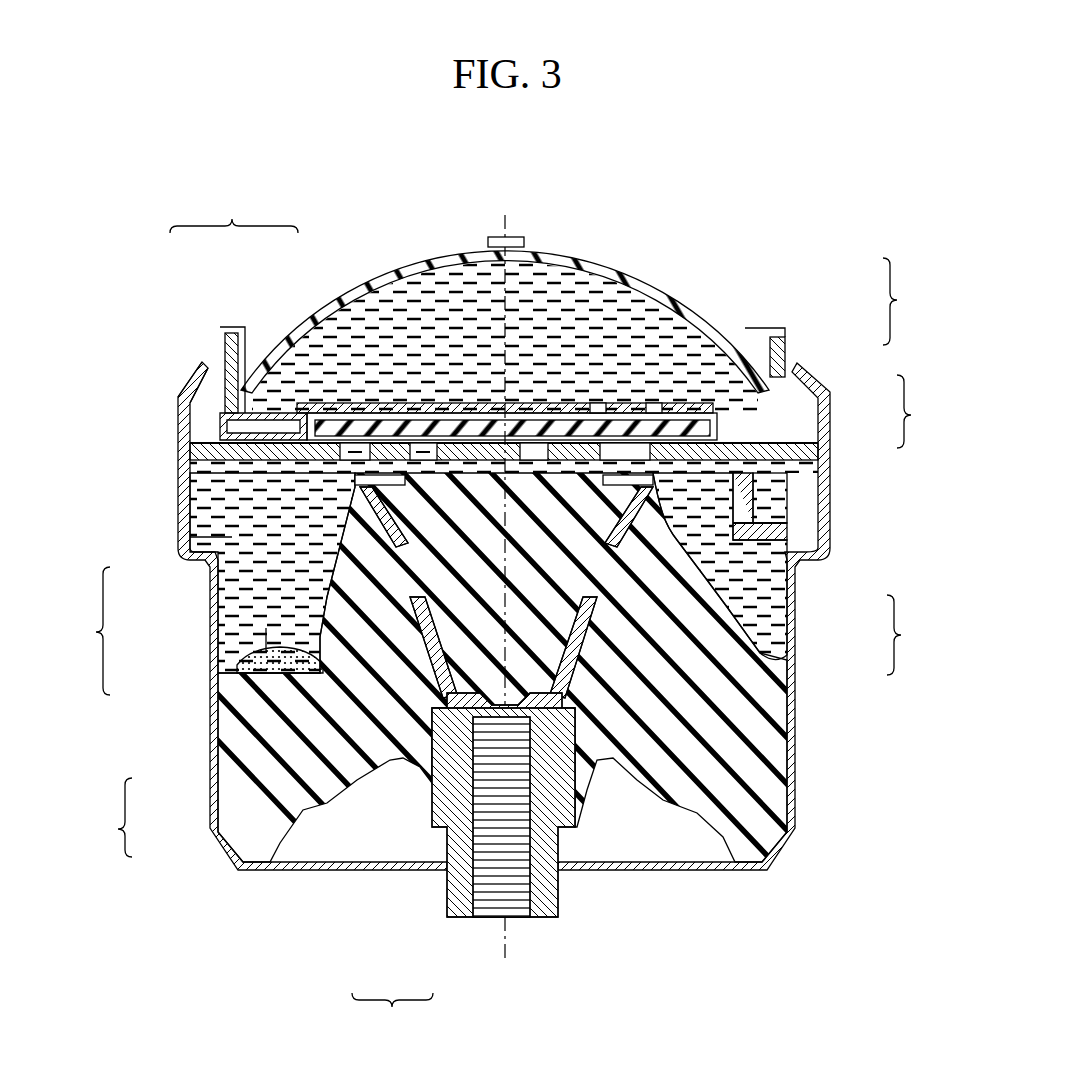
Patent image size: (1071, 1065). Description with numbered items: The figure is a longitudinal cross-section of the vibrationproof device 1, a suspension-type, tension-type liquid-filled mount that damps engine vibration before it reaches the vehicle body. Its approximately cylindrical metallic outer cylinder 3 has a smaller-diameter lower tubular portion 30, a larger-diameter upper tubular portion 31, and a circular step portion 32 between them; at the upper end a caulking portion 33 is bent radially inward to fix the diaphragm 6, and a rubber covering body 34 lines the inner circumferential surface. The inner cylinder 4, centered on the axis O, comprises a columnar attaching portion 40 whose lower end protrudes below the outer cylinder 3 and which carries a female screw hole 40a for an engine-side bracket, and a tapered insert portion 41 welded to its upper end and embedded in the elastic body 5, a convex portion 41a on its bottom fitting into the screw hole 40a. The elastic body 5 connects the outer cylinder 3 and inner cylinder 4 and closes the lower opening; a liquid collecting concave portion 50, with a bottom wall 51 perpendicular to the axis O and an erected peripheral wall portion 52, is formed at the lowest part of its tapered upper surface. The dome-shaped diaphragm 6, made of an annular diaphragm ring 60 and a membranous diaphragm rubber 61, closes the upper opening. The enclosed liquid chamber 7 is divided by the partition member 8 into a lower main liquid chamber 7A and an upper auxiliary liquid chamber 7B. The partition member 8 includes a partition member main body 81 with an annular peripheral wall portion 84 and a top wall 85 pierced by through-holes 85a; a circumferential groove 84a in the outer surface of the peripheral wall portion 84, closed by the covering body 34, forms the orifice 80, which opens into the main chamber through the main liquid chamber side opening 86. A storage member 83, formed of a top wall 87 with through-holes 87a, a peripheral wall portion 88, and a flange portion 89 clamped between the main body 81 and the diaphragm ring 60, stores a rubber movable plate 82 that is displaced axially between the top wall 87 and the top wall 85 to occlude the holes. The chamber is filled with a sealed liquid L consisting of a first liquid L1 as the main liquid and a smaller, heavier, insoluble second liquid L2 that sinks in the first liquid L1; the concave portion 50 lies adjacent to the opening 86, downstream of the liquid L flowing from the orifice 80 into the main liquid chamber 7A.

The vibrationproof device 1 is at (772, 180).
The outer cylinder 3 is at (93, 631).
The lower tubular portion 30 is at (210, 695).
The upper tubular portion 31 is at (180, 530).
The step portion 32 is at (212, 578).
The caulking portion 33 is at (183, 383).
The covering body 34 is at (190, 503).
The inner cylinder 4 is at (392, 1018).
The attaching portion 40 is at (447, 918).
The female screw hole 40a is at (520, 920).
The insert portion 41 is at (418, 640).
The convex portion 41a is at (512, 722).
The elastic body 5 is at (670, 790).
The liquid collecting concave portion 50 is at (236, 690).
The bottom wall 51 is at (268, 690).
The peripheral wall portion 52 is at (290, 685).
The diaphragm 6 is at (899, 301).
The diaphragm ring 60 is at (795, 367).
The diaphragm rubber 61 is at (679, 291).
The liquid chamber 7 is at (914, 411).
The main liquid chamber 7A is at (760, 548).
The auxiliary liquid chamber 7B is at (752, 416).
The partition member 8 is at (186, 447).
The orifice 80 is at (816, 490).
The partition member main body 81 is at (911, 635).
The movable plate 82 is at (410, 418).
The storage member 83 is at (234, 214).
The peripheral wall portion 84 is at (710, 492).
The circumferential groove 84a is at (789, 510).
The top wall 85 is at (532, 458).
The through-holes 85a is at (357, 445).
The main liquid chamber side opening 86 is at (296, 496).
The top wall 87 is at (300, 418).
The through-holes 87a is at (653, 410).
The peripheral wall portion 88 is at (250, 437).
The flange portion 89 is at (213, 425).
The sealed liquid L is at (114, 817).
The first liquid L1 is at (268, 650).
The second liquid L2 is at (280, 675).
The axis O is at (508, 213).